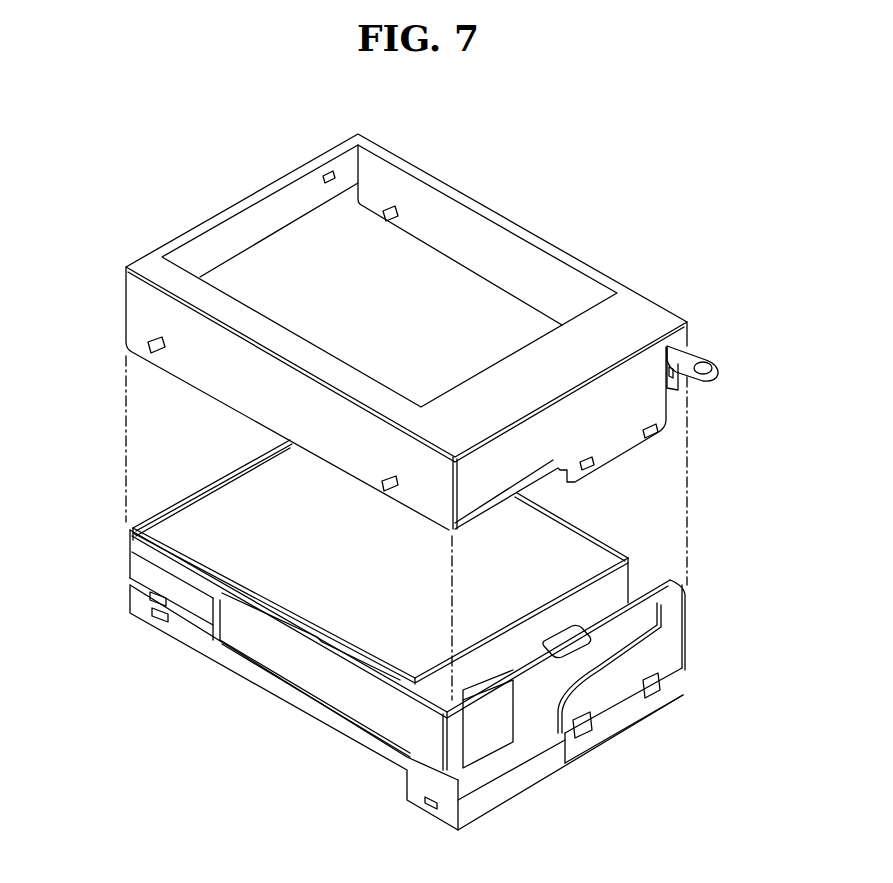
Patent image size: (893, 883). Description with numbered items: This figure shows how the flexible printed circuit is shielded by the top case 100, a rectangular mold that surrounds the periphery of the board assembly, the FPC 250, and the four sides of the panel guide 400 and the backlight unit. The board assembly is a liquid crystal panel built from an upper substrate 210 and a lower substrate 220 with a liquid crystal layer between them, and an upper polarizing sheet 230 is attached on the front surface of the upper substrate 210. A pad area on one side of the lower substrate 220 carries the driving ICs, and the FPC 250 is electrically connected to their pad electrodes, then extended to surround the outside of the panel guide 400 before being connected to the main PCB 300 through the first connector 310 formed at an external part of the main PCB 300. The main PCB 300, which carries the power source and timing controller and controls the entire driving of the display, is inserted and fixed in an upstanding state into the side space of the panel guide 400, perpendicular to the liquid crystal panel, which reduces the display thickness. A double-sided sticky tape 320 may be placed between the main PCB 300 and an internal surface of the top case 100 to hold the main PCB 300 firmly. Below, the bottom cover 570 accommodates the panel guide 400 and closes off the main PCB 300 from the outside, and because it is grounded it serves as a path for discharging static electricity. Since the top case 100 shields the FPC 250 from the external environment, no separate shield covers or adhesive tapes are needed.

The top case 100 is at (527, 235).
The upper substrate 210 is at (147, 523).
The lower substrate 220 is at (137, 525).
The upper polarizing sheet 230 is at (195, 508).
The FPC 250 is at (310, 673).
The main PCB 300 is at (538, 758).
The first connector 310 is at (500, 748).
The double-sided sticky tape 320 is at (570, 643).
The panel guide 400 is at (668, 648).
The bottom cover 570 is at (675, 682).